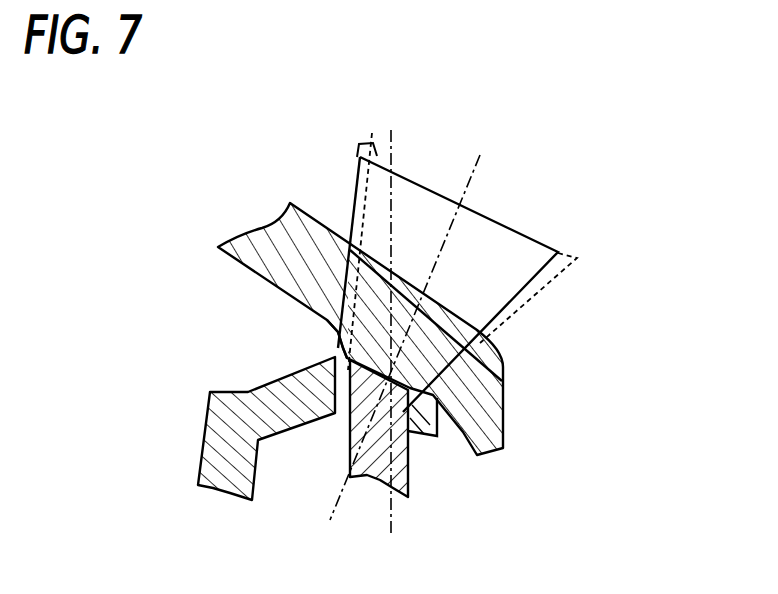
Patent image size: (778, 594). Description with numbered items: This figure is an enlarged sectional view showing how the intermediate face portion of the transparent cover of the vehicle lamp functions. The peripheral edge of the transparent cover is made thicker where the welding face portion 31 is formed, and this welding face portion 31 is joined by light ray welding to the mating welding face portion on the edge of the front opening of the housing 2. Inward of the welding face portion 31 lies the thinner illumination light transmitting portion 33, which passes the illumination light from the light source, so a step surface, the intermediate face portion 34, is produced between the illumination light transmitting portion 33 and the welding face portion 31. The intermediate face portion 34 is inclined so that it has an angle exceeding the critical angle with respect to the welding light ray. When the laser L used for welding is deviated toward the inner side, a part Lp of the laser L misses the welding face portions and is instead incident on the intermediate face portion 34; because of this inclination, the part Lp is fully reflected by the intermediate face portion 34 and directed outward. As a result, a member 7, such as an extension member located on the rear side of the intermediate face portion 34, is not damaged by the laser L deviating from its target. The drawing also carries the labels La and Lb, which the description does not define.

The housing 2 is at (349, 428).
The member 7 is at (205, 437).
The welding face portion 31 is at (412, 431).
The illumination light transmitting portion 33 is at (258, 272).
The intermediate face portion 34 is at (345, 353).
The laser L is at (483, 240).
The lens side surface La is at (366, 185).
The lens side surface Lb is at (505, 308).
The part of the laser Lp is at (405, 319).